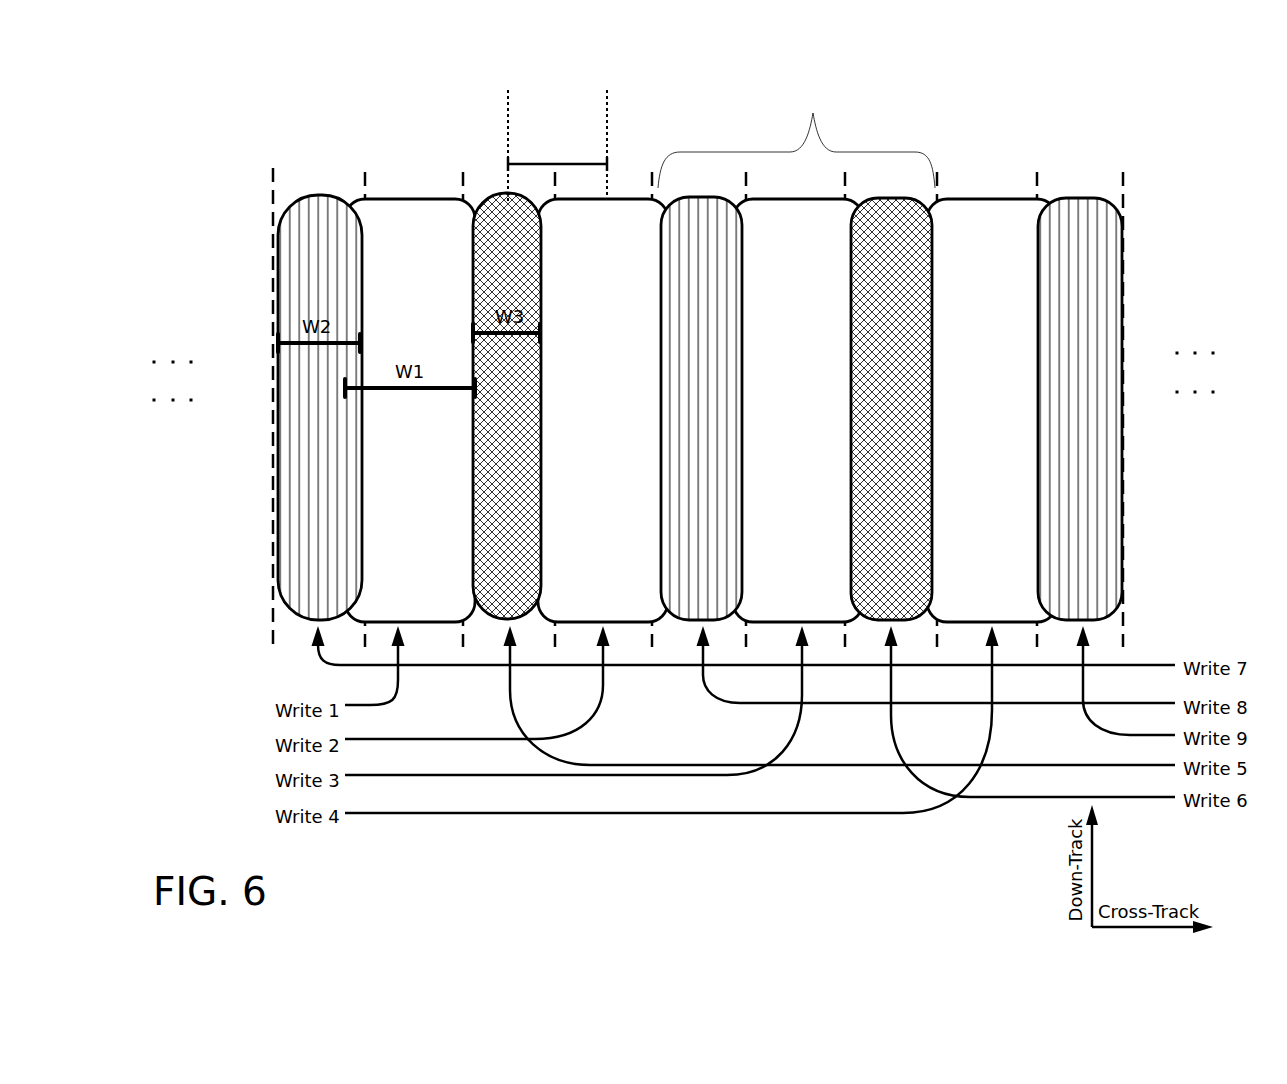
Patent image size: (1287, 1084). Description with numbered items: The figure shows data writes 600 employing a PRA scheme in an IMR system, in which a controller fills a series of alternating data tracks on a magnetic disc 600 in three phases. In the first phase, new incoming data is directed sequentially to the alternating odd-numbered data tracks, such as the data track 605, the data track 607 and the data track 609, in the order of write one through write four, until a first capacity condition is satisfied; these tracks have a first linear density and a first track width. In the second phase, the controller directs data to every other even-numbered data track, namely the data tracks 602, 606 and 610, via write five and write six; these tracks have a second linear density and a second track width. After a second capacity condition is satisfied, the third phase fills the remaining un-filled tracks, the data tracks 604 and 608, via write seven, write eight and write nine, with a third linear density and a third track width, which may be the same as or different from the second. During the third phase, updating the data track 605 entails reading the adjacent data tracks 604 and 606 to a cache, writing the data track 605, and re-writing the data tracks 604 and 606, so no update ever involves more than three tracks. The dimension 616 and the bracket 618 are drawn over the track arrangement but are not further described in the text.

The data writes 600 is at (335, 141).
The data track 602 is at (376, 408).
The data track 604 is at (507, 406).
The data track 605 is at (603, 410).
The data track 606 is at (701, 408).
The data track 607 is at (798, 410).
The data track 608 is at (891, 409).
The data track 609 is at (992, 410).
The data track 610 is at (1080, 409).
The track pitch 616 is at (557, 146).
The band of tracks 618 is at (813, 113).